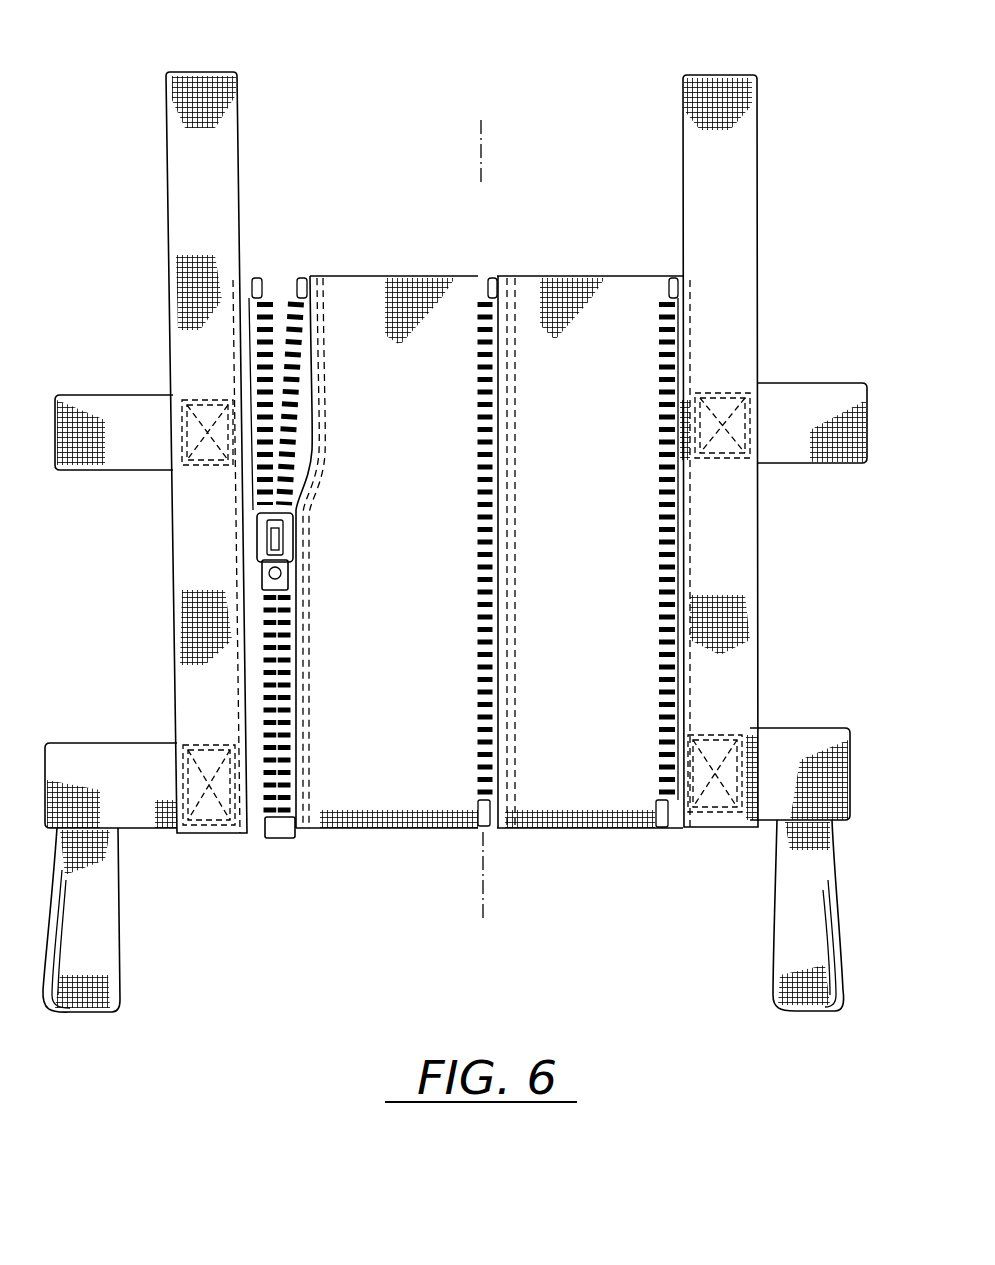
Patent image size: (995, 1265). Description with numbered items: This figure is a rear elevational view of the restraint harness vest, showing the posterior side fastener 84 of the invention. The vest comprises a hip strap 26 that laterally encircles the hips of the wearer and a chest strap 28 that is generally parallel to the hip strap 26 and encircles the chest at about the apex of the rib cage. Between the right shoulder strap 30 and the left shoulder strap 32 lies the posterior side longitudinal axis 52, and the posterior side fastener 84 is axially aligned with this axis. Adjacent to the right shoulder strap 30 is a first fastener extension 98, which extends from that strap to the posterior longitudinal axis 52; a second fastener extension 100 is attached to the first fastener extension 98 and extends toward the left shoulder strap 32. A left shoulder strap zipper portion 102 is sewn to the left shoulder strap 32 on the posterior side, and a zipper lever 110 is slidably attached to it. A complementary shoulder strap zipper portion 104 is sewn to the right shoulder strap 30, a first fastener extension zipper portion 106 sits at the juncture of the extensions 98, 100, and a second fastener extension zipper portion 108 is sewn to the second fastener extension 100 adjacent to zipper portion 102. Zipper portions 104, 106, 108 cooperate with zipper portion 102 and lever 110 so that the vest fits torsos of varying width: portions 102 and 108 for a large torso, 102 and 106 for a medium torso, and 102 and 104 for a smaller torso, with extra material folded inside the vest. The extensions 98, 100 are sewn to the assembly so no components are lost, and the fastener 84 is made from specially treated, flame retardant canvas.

The hip strap 26 is at (815, 728).
The chest strap 28 is at (835, 383).
The right shoulder strap 30 is at (735, 75).
The left shoulder strap 32 is at (212, 72).
The posterior side longitudinal axis 52 is at (490, 898).
The posterior side fastener 84 is at (429, 845).
The first fastener extension 98 is at (590, 832).
The second fastener extension 100 is at (363, 832).
The left shoulder strap zipper portion 102 is at (250, 280).
The shoulder strap zipper portion 104 is at (672, 292).
The first fastener extension zipper portion 106 is at (488, 296).
The second fastener extension zipper portion 108 is at (290, 300).
The zipper lever 110 is at (285, 568).